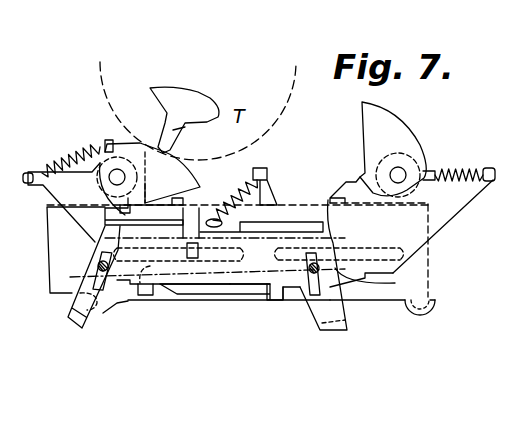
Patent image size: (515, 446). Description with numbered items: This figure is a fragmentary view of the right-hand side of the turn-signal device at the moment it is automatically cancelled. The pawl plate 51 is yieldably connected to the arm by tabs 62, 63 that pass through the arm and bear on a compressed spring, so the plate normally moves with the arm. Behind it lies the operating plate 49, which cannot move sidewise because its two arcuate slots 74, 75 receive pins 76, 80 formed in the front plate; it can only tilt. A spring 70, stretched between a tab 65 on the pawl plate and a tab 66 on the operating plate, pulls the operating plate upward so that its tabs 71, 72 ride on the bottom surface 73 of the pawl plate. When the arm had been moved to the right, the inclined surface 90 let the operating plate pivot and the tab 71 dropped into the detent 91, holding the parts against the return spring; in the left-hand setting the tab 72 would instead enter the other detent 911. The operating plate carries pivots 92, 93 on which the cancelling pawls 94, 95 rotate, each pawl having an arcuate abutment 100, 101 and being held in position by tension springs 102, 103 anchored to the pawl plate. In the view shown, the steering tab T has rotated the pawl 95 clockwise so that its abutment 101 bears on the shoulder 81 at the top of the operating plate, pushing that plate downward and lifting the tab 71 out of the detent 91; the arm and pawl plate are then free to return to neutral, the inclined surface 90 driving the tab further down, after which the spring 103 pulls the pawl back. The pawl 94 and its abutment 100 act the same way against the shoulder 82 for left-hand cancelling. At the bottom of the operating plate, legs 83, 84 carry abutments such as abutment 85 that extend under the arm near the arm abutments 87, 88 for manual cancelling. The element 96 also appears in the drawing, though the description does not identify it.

The operating plate 49 is at (104, 239).
The pawl plate 51 is at (463, 208).
The tab 62 is at (187, 247).
The tab 63 is at (330, 246).
The tab 65 is at (272, 175).
The tab 66 is at (212, 219).
The spring 70 is at (250, 175).
The tab 71 is at (147, 300).
The tab 72 is at (275, 300).
The bottom surface 73 is at (238, 300).
The arcuate slot 74 is at (93, 282).
The arcuate slot 75 is at (318, 280).
The pin 76 is at (100, 266).
The pin 80 is at (395, 287).
The shoulder 81 is at (103, 212).
The shoulder 82 is at (277, 222).
The leg 83 is at (67, 308).
The leg 84 is at (317, 328).
The abutment 85 is at (78, 325).
The abutment 87 is at (103, 313).
The abutment 88 is at (420, 318).
The inclined surface 90 is at (170, 300).
The detent 91 is at (179, 265).
The detent 911 is at (368, 290).
The pivot 92 is at (391, 165).
The pivot 93 is at (125, 177).
The cancelling pawl 94 is at (385, 118).
The cancelling pawl 95 is at (143, 152).
The end 96 is at (333, 333).
The arcuate abutment 100 is at (356, 182).
The arcuate abutment 101 is at (100, 176).
The tension spring 102 is at (463, 168).
The tension spring 103 is at (70, 152).